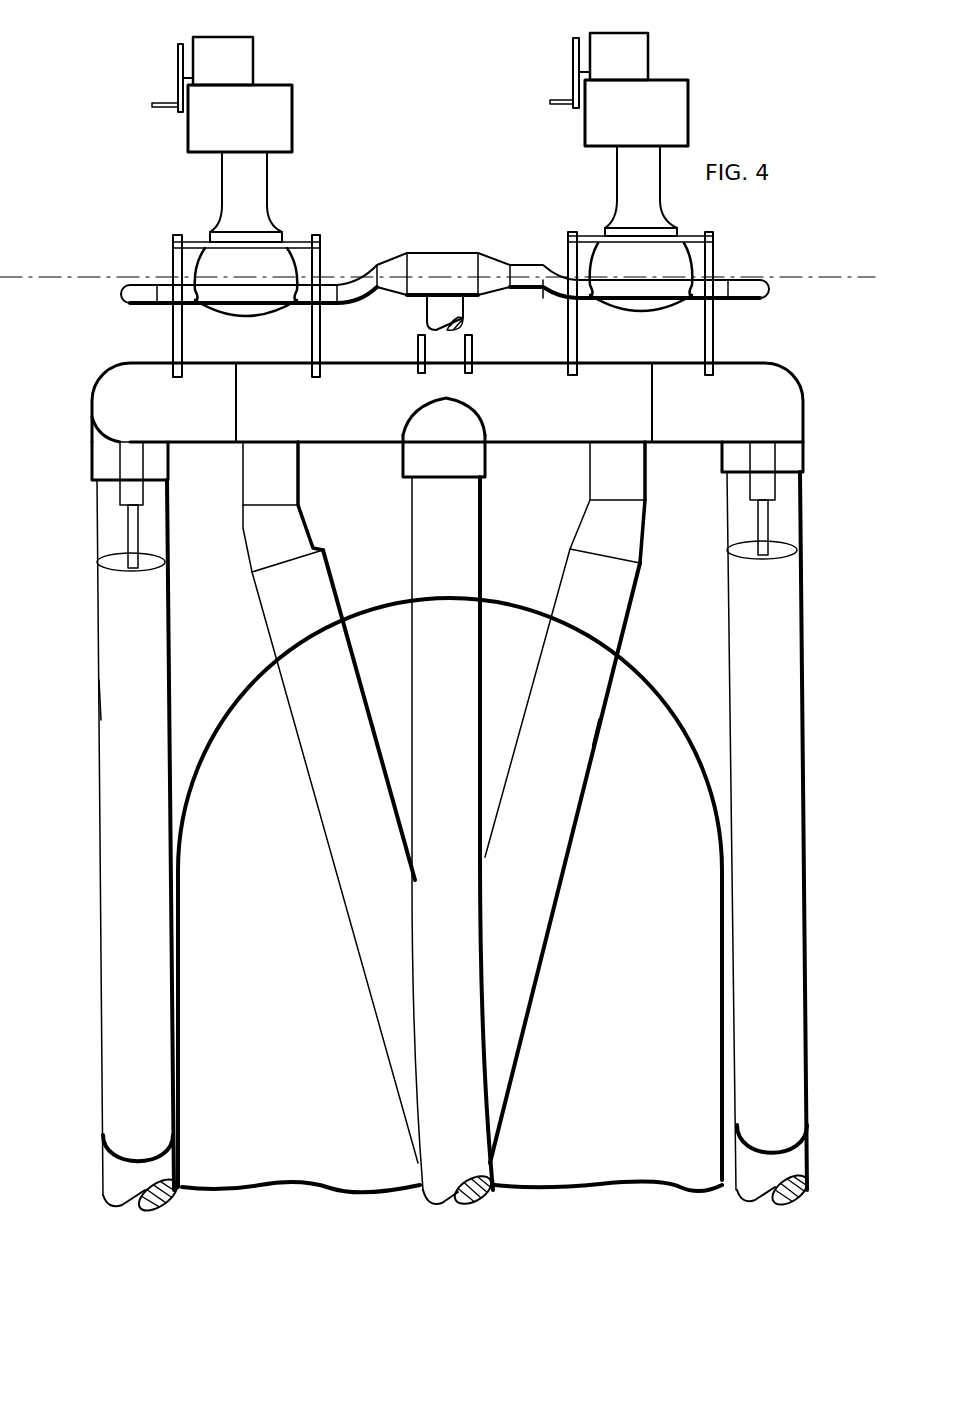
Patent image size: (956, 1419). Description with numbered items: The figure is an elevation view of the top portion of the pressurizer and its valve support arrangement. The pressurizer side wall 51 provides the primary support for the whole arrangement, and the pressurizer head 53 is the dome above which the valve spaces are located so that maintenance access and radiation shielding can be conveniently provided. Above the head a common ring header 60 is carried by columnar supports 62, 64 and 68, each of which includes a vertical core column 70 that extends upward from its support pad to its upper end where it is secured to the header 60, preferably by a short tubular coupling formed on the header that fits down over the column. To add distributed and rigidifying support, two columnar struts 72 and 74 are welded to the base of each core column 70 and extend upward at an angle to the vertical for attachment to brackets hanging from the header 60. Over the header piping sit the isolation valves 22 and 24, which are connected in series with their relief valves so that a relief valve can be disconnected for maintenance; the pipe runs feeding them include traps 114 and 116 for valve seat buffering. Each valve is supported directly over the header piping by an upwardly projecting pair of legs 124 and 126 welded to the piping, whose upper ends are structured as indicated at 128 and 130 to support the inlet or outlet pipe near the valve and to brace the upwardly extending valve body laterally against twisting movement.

The isolation valve 22 is at (597, 47).
The isolation valve 24 is at (283, 103).
The pressurizer side wall 51 is at (623, 1155).
The pressurizer head 53 is at (343, 612).
The common ring header 60 is at (122, 370).
The columnar support 62 is at (437, 1168).
The columnar support 64 is at (797, 1160).
The columnar support 68 is at (118, 1167).
The core column 70 is at (97, 530).
The columnar strut 72 is at (296, 735).
The columnar strut 74 is at (122, 695).
The trap 114 is at (536, 295).
The trap 116 is at (330, 287).
The leg 124 is at (182, 337).
The leg 126 is at (320, 345).
The leg upper end structure 128 is at (716, 240).
The leg upper end structure 130 is at (590, 238).